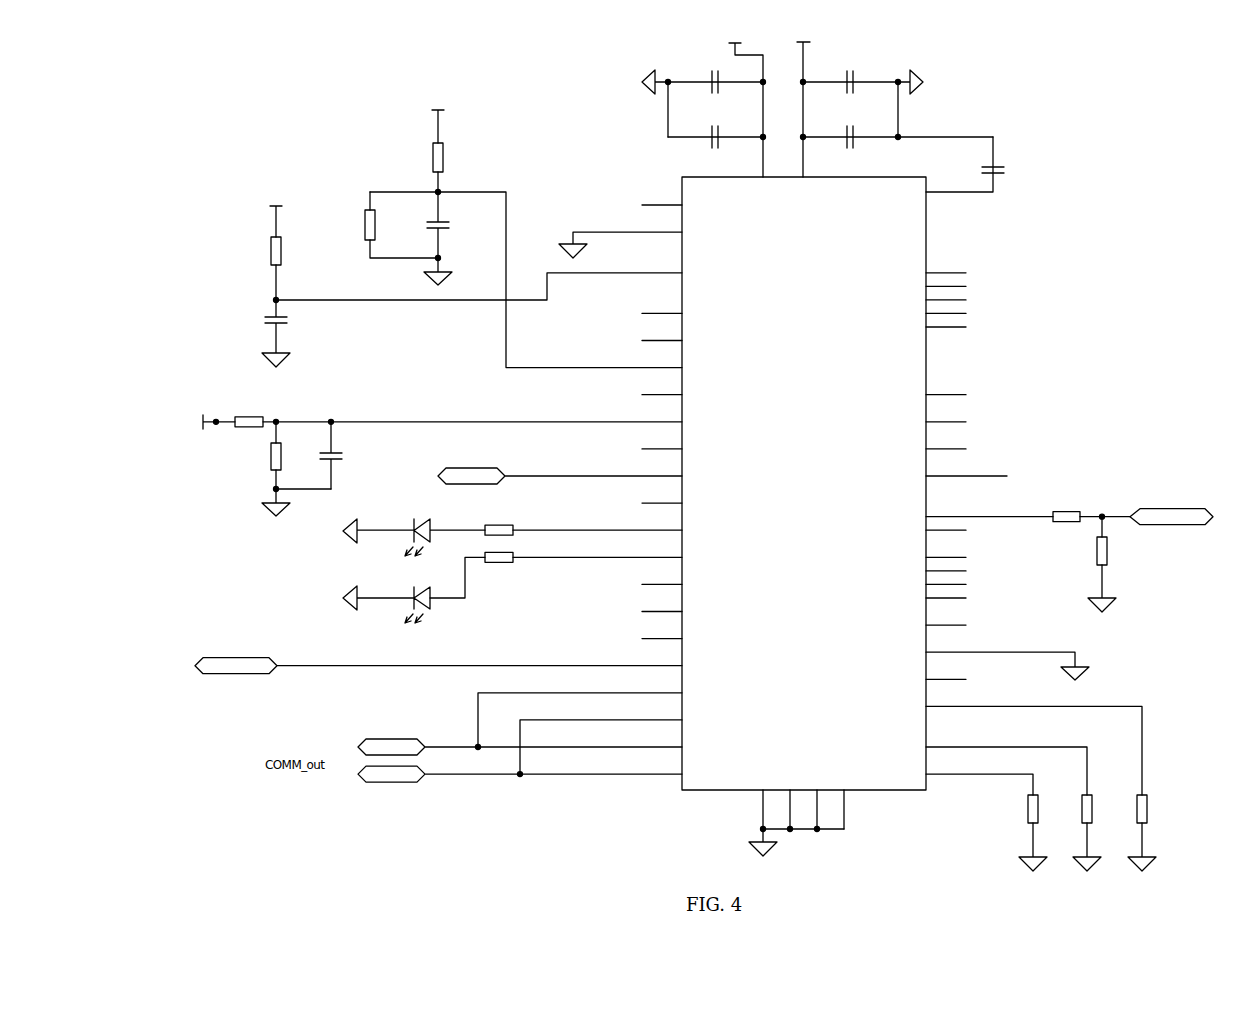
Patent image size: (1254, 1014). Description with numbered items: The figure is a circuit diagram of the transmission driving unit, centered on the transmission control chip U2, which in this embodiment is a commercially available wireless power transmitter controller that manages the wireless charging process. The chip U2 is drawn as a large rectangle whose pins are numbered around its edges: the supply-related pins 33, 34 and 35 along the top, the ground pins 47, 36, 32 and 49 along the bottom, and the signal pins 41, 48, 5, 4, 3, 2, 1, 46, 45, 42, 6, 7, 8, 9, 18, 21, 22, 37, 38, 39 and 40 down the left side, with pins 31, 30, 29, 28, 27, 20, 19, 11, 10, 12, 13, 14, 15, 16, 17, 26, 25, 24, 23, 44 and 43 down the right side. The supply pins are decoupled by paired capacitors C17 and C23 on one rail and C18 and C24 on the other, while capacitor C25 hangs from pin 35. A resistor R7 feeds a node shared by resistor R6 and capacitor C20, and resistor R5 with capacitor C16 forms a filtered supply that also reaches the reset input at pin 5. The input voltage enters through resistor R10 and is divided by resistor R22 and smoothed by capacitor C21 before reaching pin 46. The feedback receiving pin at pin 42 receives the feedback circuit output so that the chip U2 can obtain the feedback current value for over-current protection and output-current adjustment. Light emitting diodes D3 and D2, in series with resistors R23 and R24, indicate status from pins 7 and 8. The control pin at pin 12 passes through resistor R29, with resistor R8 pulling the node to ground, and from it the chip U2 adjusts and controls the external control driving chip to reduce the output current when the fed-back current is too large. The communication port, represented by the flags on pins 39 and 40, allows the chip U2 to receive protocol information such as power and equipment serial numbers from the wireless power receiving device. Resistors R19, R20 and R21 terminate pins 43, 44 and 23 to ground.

The transmission control chip U2 is at (829, 498).
The resistor R5 is at (275, 247).
The resistor R6 is at (401, 225).
The resistor R7 is at (438, 141).
The resistor R8 is at (1150, 550).
The resistor R10 is at (220, 415).
The resistor R19 is at (1042, 830).
The resistor R20 is at (1096, 830).
The resistor R21 is at (1151, 830).
The resistor R22 is at (296, 467).
The resistor R23 is at (498, 522).
The resistor R24 is at (471, 575).
The resistor R29 is at (1065, 509).
The capacitor C16 is at (287, 333).
The capacitor C17 is at (704, 100).
The capacitor C18 is at (862, 100).
The capacitor C20 is at (450, 238).
The capacitor C21 is at (346, 454).
The capacitor C23 is at (717, 133).
The capacitor C24 is at (897, 133).
The capacitor C25 is at (1005, 171).
The light emitting diode D2 is at (386, 602).
The light emitting diode D3 is at (414, 530).
The pin 1 AD_5 1 is at (680, 391).
The pin 2 T_SENSE 2 is at (554, 283).
The pin 3 AD_ 3 is at (680, 337).
The pin 4 AD_8 4 is at (680, 310).
The pin 5 RESET 5 is at (501, 280).
The pin 6 SLEEP 6 is at (683, 500).
The pin 7 MSP_RST 7 is at (627, 527).
The pin 8 MSP_MISO 8 is at (630, 554).
The pin 9 MSP_TEST 9 is at (695, 581).
The pin 10 PMB_CLK 10 is at (939, 473).
The pin 11 PMB_DATA 11 is at (915, 445).
The pin 12 DPWM-1A 12 is at (998, 513).
The pin 13 DPWM-1B 13 is at (916, 535).
The pin 14 MSP_SYNC 14 is at (923, 558).
The pin 15 DOUT_2B 15 is at (927, 571).
The pin 16 DOUT_4A 16 is at (927, 585).
The pin 17 DOUT_4B 17 is at (927, 598).
The pin 18 MSP_CLK 18 is at (692, 608).
The pin 19 PMB_ALERT 19 is at (912, 418).
The pin 20 PMB_CTRL 20 is at (915, 391).
The pin 21 DOUT_TX 21 is at (692, 635).
The pin 22 BRD_MODE 22 is at (474, 672).
The pin 23 BUZ_AC 23 is at (1010, 744).
The pin 24 BUZ_DC 24 is at (921, 676).
The pin 25 MSP_MISI 25 is at (980, 659).
The pin 26 MSP_RDY 26 is at (918, 622).
The pin 27 TCK 27 is at (941, 327).
The pin 28 TDO 28 is at (940, 314).
The pin 29 TDI 29 is at (943, 300).
The pin 30 TMS 30 is at (940, 287).
The pin 31 TRST 31 is at (938, 273).
The pin 32 DGND 32 is at (808, 811).
The pin 33 V33D 33 is at (717, 106).
The pin 34 V33A 34 is at (831, 103).
The pin 35 BPCAP 35 is at (939, 167).
The pin 36 AGND1 36 is at (781, 811).
The pin 37 COMM_A+ 37 is at (613, 713).
The pin 38 COMM_A- 38 is at (631, 740).
The pin 39 COMM_B+ 39 is at (553, 738).
The pin 40 COMM_B- 40 is at (550, 780).
The pin 41 V33FB 41 is at (684, 202).
The pin 42 I_SENSE 42 is at (586, 465).
The pin 43 PMOD_THR 43 is at (946, 777).
The pin 44 LED_MODE 44 is at (974, 764).
The pin 45 AD_7 45 is at (680, 445).
The pin 46 V_IN 46 is at (488, 418).
The pin 47 AGND2 47 is at (792, 823).
The pin 48 ADC_REF 48 is at (650, 238).
The pin 49 EPAD 49 is at (834, 809).